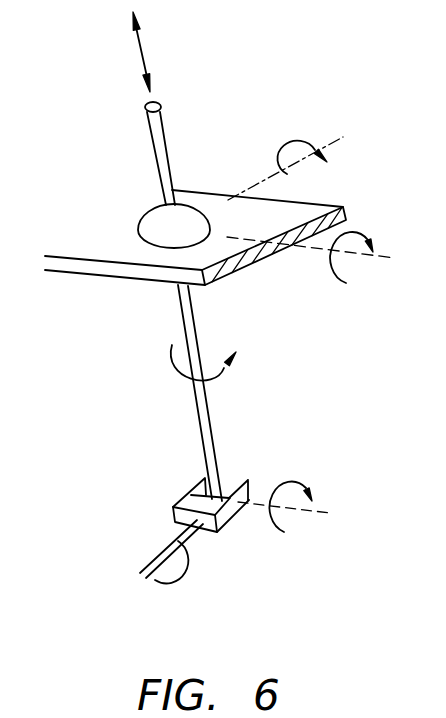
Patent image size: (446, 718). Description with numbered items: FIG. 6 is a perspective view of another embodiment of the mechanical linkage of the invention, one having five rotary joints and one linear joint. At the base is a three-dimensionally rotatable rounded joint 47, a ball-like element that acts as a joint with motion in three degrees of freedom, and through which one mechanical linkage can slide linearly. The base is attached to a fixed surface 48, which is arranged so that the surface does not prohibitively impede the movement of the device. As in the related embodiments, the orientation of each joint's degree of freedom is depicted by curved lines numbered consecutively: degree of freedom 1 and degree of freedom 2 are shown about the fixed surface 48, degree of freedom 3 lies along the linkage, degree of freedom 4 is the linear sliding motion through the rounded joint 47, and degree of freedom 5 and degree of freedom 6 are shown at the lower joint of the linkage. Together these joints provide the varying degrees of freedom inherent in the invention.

The degree of freedom 1 is at (299, 158).
The degree of freedom 2 is at (321, 257).
The degree of freedom 3 is at (217, 363).
The degree of freedom 4 is at (151, 52).
The degree of freedom 5 is at (291, 505).
The degree of freedom 6 is at (165, 536).
The rounded joint 47 is at (187, 212).
The fixed surface 48 is at (317, 207).